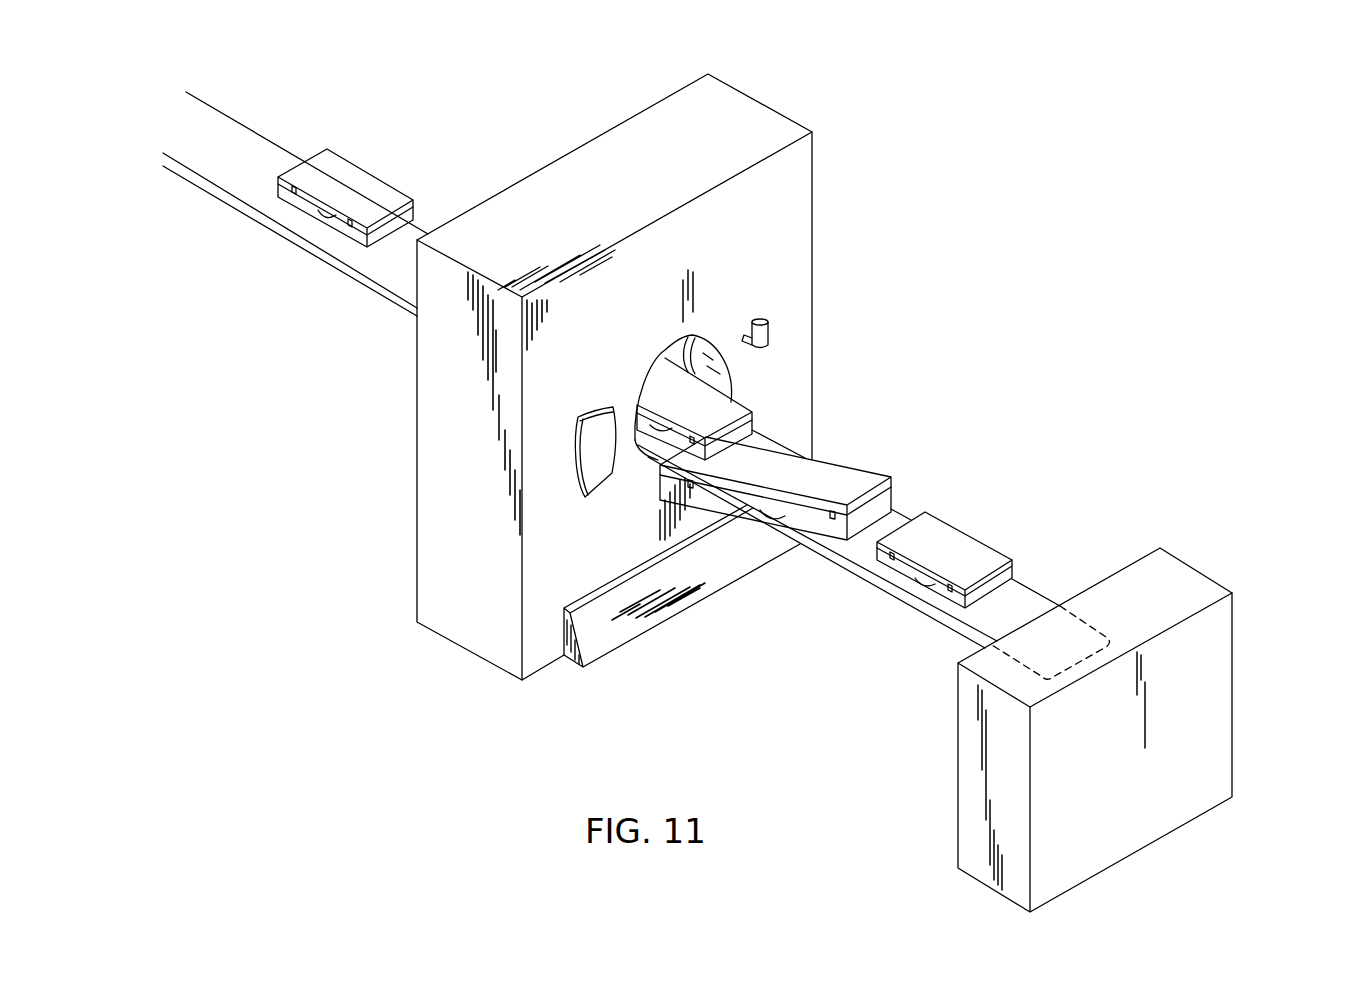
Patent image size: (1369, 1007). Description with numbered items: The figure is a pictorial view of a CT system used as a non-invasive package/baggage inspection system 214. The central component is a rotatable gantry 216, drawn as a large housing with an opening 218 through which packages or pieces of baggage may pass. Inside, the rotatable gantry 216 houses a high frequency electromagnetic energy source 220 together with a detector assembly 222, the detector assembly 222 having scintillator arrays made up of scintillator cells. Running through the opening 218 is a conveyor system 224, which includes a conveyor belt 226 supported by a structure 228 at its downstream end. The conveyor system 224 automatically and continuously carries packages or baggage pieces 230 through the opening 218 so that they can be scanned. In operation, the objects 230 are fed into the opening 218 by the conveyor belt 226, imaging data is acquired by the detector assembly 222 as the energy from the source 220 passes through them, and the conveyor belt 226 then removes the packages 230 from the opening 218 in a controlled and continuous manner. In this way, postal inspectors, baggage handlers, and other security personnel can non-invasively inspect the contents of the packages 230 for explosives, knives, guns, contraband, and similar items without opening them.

The package/baggage inspection system 214 is at (955, 390).
The rotatable gantry 216 is at (776, 229).
The opening 218 is at (710, 338).
The high frequency electromagnetic energy source 220 is at (771, 328).
The detector assembly 222 is at (601, 428).
The conveyor system 224 is at (185, 230).
The conveyor belt 226 is at (393, 261).
The structure 228 is at (1232, 663).
The packages or baggage pieces 230 is at (350, 189).